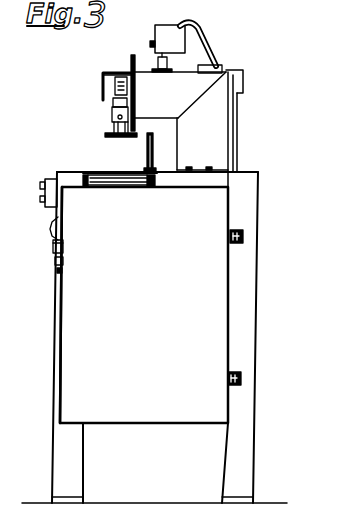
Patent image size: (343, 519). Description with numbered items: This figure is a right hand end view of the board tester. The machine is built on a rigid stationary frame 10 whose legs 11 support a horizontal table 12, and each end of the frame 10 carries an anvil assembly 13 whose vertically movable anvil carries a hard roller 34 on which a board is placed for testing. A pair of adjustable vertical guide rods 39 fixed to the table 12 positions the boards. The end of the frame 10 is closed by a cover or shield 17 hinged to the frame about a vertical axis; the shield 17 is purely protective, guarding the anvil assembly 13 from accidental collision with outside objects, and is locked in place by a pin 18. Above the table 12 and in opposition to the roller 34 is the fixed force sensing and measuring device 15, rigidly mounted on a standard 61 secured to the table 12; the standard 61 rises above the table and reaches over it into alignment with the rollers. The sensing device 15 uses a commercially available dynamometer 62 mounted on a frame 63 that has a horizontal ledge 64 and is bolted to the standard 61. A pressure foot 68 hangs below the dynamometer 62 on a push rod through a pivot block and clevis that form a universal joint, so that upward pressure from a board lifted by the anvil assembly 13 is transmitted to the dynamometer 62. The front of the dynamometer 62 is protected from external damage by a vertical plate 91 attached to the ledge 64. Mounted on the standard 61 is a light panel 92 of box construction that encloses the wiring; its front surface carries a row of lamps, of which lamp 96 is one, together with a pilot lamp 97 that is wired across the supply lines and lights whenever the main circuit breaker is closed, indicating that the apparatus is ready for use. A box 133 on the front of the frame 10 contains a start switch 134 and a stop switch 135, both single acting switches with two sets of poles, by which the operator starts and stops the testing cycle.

The frame 10 is at (53, 163).
The legs 11 is at (83, 473).
The table 12 is at (67, 173).
The anvil assembly 13 is at (100, 170).
The force sensing and measuring device 15 is at (92, 102).
The cover or shield 17 is at (160, 298).
The pin 18 is at (54, 246).
The roller 34 is at (120, 172).
The vertical guide rods 39 is at (153, 163).
The standard 61 is at (216, 155).
The dynamometer 62 is at (114, 87).
The frame 63 is at (131, 59).
The horizontal ledge 64 is at (110, 72).
The pressure foot 68 is at (104, 133).
The vertical plate 91 is at (102, 75).
The light panel 92 is at (182, 24).
The lamp 96 is at (150, 44).
The pilot lamp 97 is at (154, 41).
The box 133 is at (55, 182).
The start switch 134 is at (43, 188).
The stop switch 135 is at (43, 200).